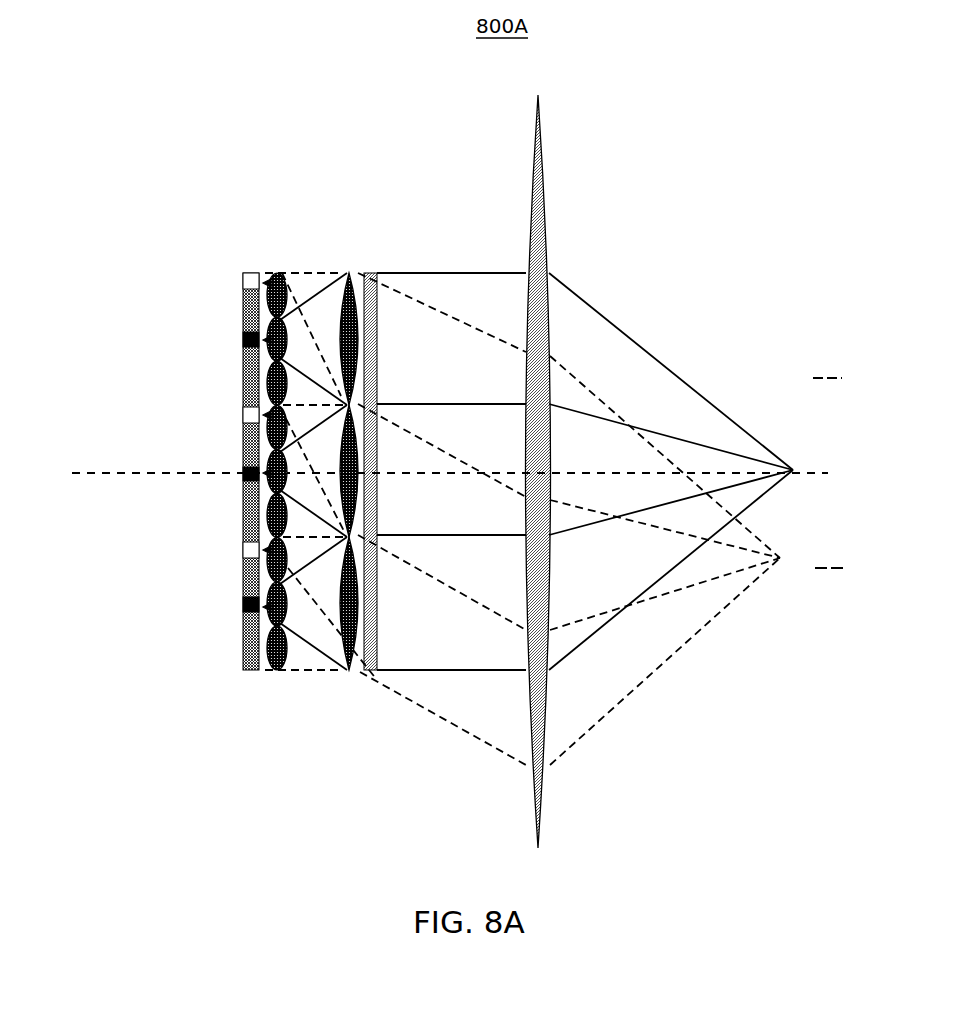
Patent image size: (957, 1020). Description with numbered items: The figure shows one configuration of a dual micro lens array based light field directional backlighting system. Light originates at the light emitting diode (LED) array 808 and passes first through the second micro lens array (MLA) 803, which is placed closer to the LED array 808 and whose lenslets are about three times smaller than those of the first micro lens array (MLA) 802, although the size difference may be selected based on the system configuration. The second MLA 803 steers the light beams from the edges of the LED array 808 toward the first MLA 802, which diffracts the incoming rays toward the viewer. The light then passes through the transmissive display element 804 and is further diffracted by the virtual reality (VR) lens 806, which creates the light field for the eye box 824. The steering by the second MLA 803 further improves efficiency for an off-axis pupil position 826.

The first micro lens array (MLA) 802 is at (348, 272).
The second micro lens array (MLA) 803 is at (272, 272).
The transmissive display element 804 is at (367, 272).
The virtual reality (VR) lens 806 is at (538, 98).
The light emitting diode (LED) array 808 is at (247, 272).
The eye box 824 is at (843, 524).
The off-axis pupil position 826 is at (782, 566).